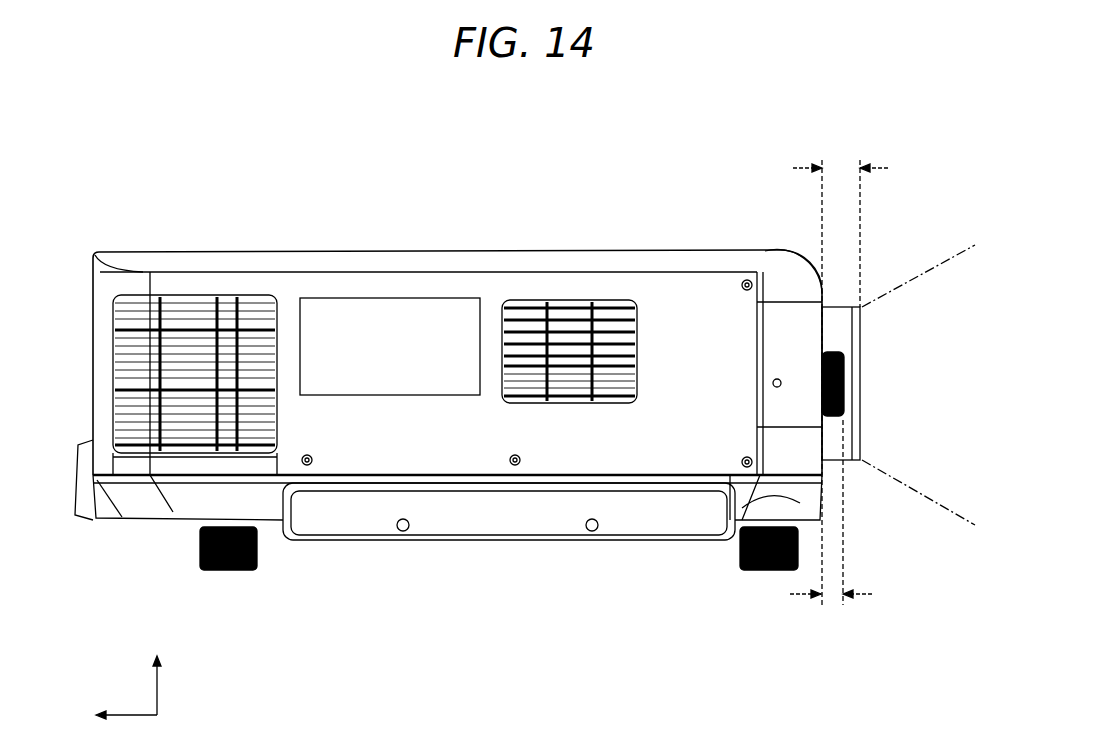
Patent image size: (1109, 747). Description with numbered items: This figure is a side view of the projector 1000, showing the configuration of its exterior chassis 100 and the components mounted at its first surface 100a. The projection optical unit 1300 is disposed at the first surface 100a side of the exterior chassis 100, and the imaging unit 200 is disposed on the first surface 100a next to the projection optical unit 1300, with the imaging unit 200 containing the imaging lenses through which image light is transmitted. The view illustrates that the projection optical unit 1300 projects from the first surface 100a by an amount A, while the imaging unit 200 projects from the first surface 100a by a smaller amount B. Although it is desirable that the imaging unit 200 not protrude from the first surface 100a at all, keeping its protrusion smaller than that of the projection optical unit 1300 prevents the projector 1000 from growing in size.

The projector 1000 is at (738, 121).
The exterior chassis 100 is at (555, 455).
The first surface 100a is at (822, 286).
The projection optical unit 1300 is at (860, 345).
The imaging unit 200 is at (843, 378).